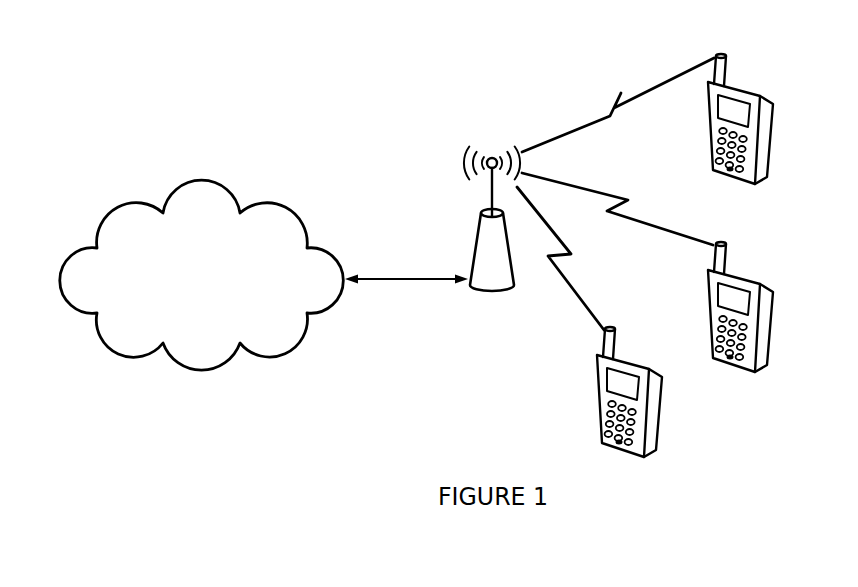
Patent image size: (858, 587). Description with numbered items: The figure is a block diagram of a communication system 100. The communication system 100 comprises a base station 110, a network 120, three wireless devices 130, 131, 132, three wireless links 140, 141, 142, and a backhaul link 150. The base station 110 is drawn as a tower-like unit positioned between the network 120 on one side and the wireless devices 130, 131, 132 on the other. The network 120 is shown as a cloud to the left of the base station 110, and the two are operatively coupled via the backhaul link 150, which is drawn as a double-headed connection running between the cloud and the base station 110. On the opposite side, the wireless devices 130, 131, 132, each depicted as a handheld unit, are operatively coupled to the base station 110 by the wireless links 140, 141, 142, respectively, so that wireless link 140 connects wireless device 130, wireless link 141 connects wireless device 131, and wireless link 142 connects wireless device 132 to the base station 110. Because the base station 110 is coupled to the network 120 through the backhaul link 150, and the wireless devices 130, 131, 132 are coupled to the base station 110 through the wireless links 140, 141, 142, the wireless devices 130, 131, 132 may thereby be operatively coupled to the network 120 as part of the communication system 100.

The communication system 100 is at (116, 62).
The base station 110 is at (497, 287).
The network 120 is at (223, 296).
The wireless device 130 is at (754, 184).
The wireless device 131 is at (760, 373).
The wireless device 132 is at (640, 460).
The wireless link 140 is at (612, 118).
The wireless link 141 is at (610, 197).
The wireless link 142 is at (568, 280).
The backhaul link 150 is at (426, 278).